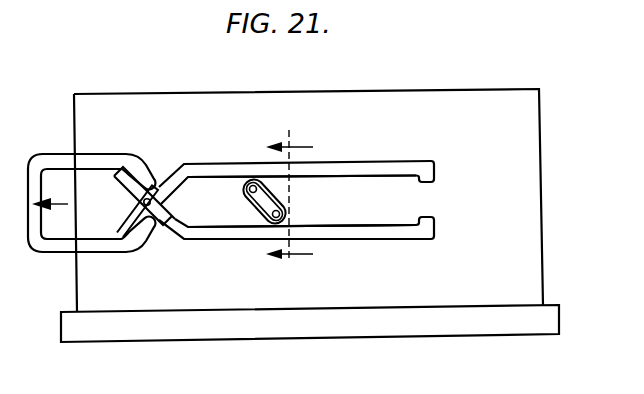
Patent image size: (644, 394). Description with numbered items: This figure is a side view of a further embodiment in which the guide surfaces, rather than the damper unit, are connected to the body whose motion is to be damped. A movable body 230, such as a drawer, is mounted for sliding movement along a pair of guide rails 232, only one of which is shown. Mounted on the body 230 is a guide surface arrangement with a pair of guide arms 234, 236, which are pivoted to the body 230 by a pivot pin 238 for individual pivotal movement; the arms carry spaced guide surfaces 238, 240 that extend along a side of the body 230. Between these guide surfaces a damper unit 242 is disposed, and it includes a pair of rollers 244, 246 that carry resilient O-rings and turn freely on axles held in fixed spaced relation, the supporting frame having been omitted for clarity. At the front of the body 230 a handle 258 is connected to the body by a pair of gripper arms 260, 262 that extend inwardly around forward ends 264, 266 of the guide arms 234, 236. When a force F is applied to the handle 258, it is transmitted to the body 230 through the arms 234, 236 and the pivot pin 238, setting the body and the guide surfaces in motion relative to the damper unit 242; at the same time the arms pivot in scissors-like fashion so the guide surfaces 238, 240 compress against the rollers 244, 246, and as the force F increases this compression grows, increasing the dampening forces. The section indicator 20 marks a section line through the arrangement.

The movable body 230 is at (454, 86).
The guide rail 232 is at (559, 321).
The guide arm 234 is at (398, 162).
The guide arm 236 is at (398, 241).
The pivot pin 238 is at (313, 178).
The guide surface 240 is at (362, 222).
The damper unit 242 is at (250, 172).
The roller 244 is at (290, 202).
The roller 246 is at (250, 220).
The handle 258 is at (115, 152).
The gripper arm 260 is at (145, 165).
The gripper arm 262 is at (138, 249).
The forward end 264 is at (108, 184).
The forward end 266 is at (112, 223).
The section line 20 is at (275, 203).
The force F is at (66, 207).